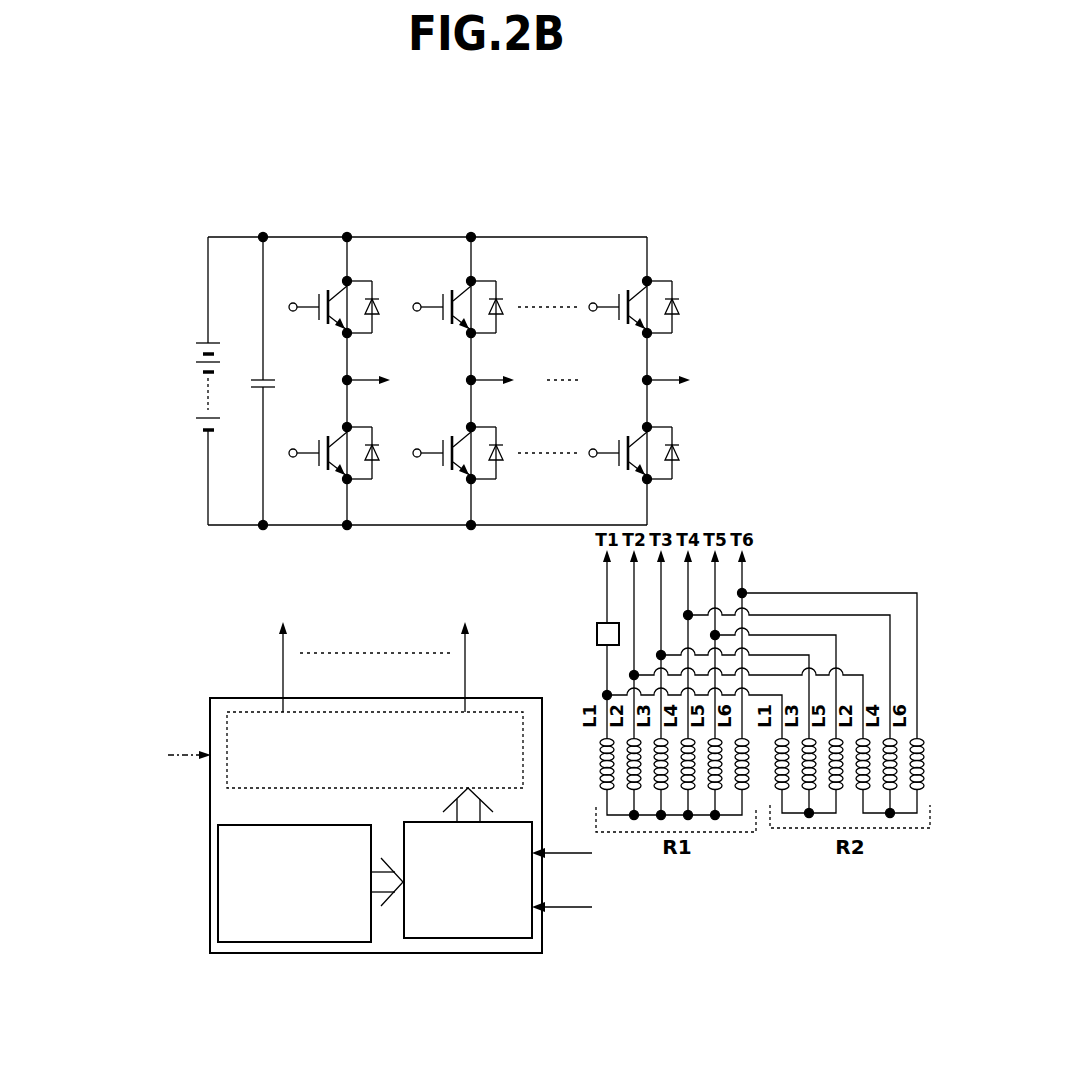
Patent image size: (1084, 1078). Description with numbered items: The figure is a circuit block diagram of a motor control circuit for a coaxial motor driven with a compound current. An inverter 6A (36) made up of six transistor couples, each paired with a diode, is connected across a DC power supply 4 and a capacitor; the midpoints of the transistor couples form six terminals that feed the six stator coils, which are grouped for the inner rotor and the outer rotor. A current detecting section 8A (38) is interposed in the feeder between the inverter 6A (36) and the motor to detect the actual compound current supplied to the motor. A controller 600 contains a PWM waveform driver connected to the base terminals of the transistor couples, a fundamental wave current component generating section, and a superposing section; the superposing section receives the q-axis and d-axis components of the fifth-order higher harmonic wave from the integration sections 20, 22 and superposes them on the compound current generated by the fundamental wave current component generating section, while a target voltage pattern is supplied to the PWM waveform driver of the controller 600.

The DC power supply 4 is at (200, 388).
The inverter 6A is at (462, 326).
The inverter 36 is at (490, 194).
The controller 600 is at (235, 698).
The current detecting section 8A is at (575, 647).
The current detecting section 38 is at (597, 632).
The integration section 20 is at (562, 843).
The integration section 22 is at (562, 897).